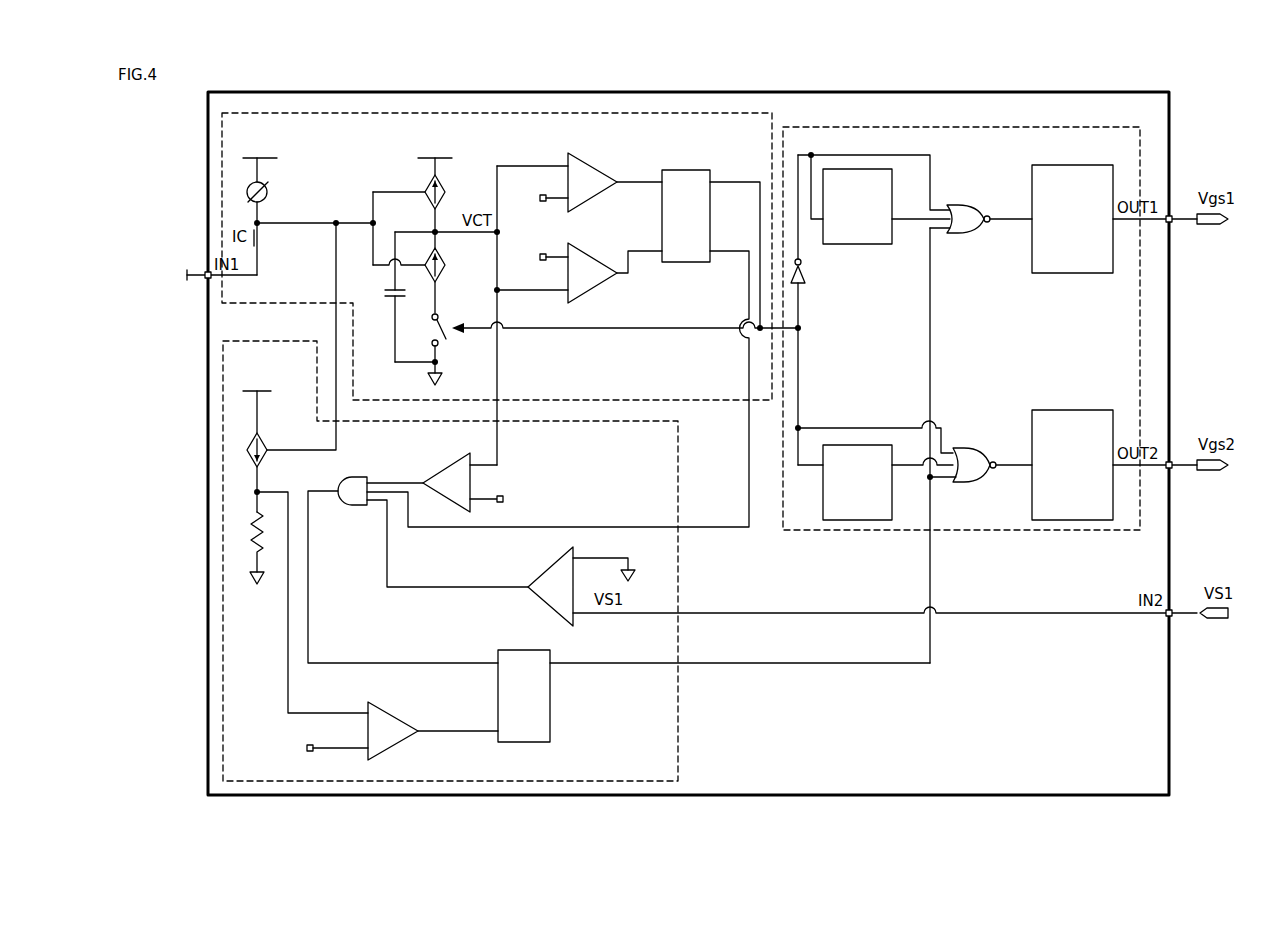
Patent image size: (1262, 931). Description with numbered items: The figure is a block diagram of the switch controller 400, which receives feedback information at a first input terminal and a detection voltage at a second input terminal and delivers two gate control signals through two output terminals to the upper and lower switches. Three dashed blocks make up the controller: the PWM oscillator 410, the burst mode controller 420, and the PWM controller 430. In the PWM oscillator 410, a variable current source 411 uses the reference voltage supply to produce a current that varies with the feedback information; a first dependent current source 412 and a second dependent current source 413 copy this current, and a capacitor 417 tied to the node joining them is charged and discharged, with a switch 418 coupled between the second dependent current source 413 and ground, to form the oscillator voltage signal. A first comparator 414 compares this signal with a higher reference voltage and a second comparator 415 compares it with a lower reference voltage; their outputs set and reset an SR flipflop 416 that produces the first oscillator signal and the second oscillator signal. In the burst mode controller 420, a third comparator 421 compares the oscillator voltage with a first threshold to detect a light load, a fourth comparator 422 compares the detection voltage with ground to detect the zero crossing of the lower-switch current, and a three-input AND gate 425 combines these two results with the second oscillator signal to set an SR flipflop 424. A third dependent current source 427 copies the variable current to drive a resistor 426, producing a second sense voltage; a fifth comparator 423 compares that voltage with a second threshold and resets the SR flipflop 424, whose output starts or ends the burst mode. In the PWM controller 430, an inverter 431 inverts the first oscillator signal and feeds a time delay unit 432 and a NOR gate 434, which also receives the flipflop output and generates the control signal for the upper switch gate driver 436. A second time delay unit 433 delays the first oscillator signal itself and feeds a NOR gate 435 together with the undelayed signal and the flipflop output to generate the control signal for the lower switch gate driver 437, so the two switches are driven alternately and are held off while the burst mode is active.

The switch controller 400 is at (1172, 750).
The PWM oscillator 410 is at (222, 172).
The variable current source 411 is at (268, 187).
The first dependent current source 412 is at (446, 188).
The second dependent current source 413 is at (446, 262).
The first comparator 414 is at (590, 154).
The second comparator 415 is at (596, 249).
The SR flipflop 416 is at (677, 265).
The capacitor 417 is at (391, 298).
The switch 418 is at (448, 341).
The burst mode controller 420 is at (222, 688).
The third comparator 421 is at (437, 463).
The fourth comparator 422 is at (537, 564).
The fifth comparator 423 is at (396, 716).
The SR flipflop 424 is at (505, 648).
The AND gate 425 is at (355, 507).
The resistor 426 is at (246, 535).
The third dependent current source 427 is at (267, 437).
The PWM controller 430 is at (996, 533).
The inverter 431 is at (808, 276).
The time delay unit 432 is at (885, 246).
The time delay unit 433 is at (885, 522).
The NOR gate 434 is at (968, 236).
The NOR gate 435 is at (972, 485).
The upper switch gate driver 436 is at (1065, 275).
The lower switch gate driver 437 is at (1098, 522).